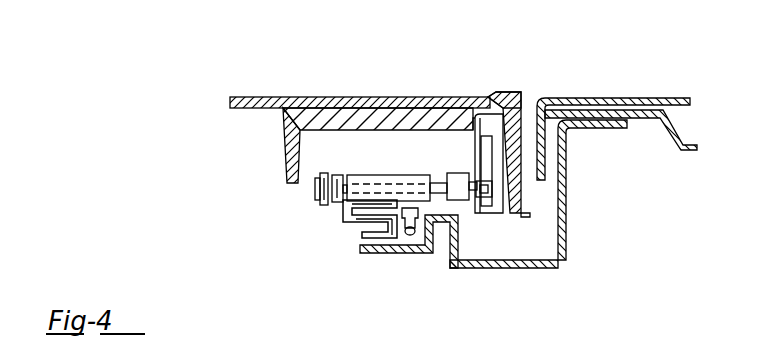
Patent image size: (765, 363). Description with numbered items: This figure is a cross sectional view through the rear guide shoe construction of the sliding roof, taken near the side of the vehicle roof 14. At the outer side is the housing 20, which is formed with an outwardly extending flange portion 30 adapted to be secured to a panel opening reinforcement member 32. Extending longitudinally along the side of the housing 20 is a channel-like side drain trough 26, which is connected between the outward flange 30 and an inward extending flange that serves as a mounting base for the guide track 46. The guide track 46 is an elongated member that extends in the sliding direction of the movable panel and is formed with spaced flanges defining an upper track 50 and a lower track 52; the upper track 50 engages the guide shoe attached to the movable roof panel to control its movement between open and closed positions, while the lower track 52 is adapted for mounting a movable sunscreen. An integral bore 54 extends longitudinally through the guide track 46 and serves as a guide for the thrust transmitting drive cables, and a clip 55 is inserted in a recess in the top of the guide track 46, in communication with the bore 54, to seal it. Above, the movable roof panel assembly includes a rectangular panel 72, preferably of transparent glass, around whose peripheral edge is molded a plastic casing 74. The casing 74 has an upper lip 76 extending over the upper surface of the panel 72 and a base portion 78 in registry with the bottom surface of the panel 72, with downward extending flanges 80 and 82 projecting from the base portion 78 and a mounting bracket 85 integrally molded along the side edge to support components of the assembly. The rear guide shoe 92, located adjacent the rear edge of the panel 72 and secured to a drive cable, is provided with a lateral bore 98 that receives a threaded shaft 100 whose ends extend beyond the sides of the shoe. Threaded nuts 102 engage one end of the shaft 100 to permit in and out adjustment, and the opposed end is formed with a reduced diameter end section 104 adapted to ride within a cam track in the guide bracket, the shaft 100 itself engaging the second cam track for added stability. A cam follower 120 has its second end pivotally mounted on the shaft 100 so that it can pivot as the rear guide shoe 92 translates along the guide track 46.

The roof 14 is at (610, 97).
The housing 20 is at (568, 270).
The side drain trough 26 is at (480, 268).
The outwardly extending flange portion 30 is at (588, 128).
The panel opening reinforcement member 32 is at (665, 138).
The guide track 46 is at (420, 255).
The upper track 50 is at (345, 228).
The lower track 52 is at (363, 238).
The bore 54 is at (408, 236).
The clip 55 is at (343, 206).
The panel 72 is at (292, 68).
The casing 74 is at (503, 82).
The upper lip 76 is at (497, 91).
The base portion 78 is at (342, 116).
The downward extending flange 80 is at (283, 150).
The downward extending flange 82 is at (522, 102).
The mounting bracket 85 is at (473, 152).
The rear guide shoe 92 is at (356, 166).
The lateral bore 98 is at (386, 184).
The threaded shaft 100 is at (441, 178).
The threaded nut 102 is at (312, 177).
The reduced diameter end section 104 is at (490, 200).
The cam follower 120 is at (467, 212).